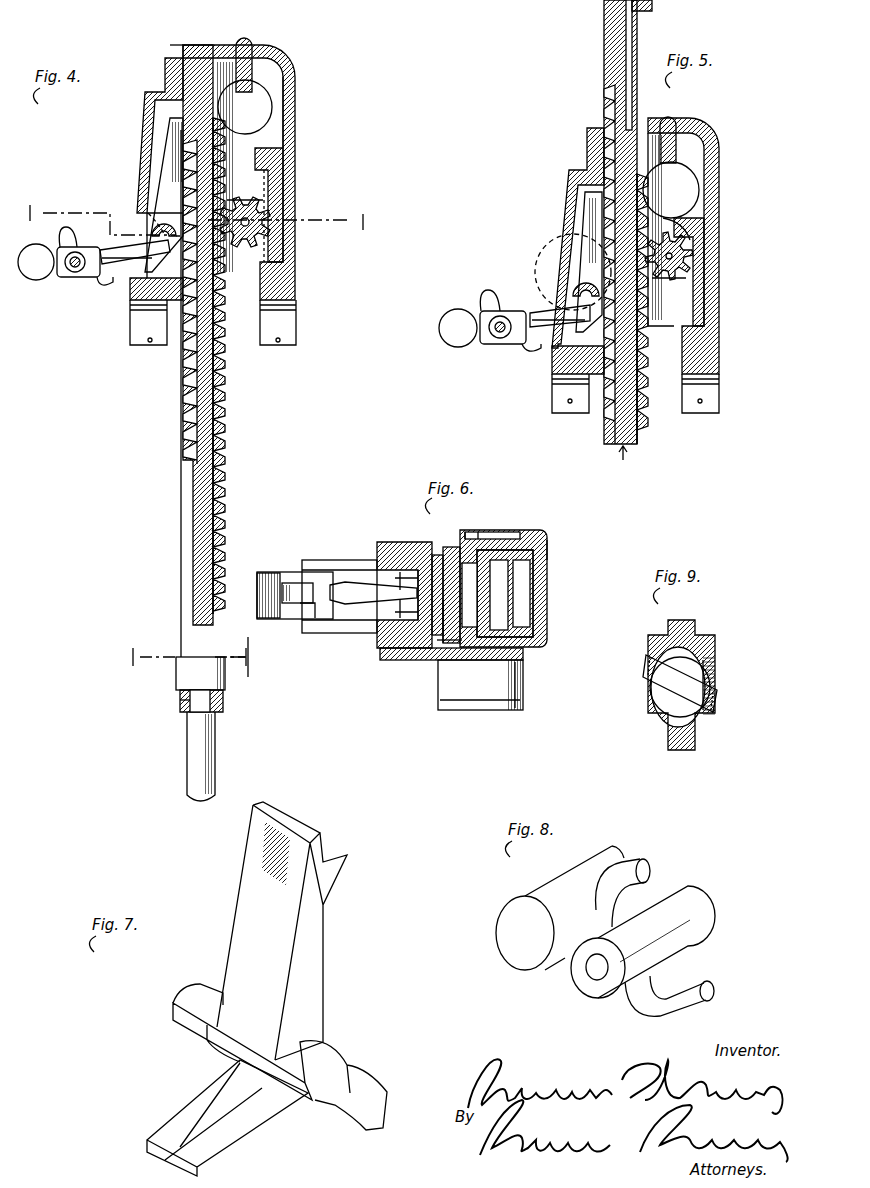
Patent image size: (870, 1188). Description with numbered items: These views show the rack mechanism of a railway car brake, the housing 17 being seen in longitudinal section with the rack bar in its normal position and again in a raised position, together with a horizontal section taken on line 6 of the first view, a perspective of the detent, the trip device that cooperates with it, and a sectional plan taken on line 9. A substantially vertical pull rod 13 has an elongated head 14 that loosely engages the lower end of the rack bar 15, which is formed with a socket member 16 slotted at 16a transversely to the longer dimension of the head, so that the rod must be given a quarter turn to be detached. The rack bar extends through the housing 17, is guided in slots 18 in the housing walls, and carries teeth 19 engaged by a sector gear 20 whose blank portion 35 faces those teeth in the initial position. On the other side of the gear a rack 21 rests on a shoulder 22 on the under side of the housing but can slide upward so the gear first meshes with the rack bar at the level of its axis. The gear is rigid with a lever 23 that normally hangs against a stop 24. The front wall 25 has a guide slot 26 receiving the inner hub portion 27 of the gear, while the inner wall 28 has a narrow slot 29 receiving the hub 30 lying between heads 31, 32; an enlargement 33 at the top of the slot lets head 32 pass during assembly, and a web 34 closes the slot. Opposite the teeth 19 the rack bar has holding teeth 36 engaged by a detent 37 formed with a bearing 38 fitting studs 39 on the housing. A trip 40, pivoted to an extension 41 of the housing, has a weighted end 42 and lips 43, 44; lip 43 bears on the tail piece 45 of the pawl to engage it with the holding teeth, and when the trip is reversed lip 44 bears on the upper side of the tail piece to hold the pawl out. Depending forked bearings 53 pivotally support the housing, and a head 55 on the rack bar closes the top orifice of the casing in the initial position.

In FIG. 4, the section line 6— 6 is at (194, 220).
In FIG. 4, the section line 9— 9 is at (189, 658).
In FIG. 6, the section line 9— 9 is at (245, 657).
In FIG. 4, the pull rod 13 is at (190, 768).
In FIG. 9, the pull rod 13 is at (660, 700).
In FIG. 9, the elongated head 14 is at (717, 694).
In FIG. 4, the rack bar 15 is at (181, 586).
In FIG. 5, the rack bar 15 is at (621, 463).
In FIG. 6, the rack bar 15 is at (440, 651).
In FIG. 9, the rack bar 15 is at (722, 734).
In FIG. 4, the socket member 16 is at (181, 712).
In FIG. 9, the socket member 16 is at (712, 646).
In FIG. 4, the slot 16a is at (180, 703).
In FIG. 9, the slot 16a is at (712, 667).
In FIG. 4, the housing 17 is at (297, 70).
In FIG. 5, the housing 17 is at (580, 150).
In FIG. 6, the housing 17 is at (548, 546).
In FIG. 6, the slots 18 is at (446, 546).
In FIG. 4, the teeth 19 is at (225, 378).
In FIG. 5, the teeth 19 is at (648, 420).
In FIG. 6, the teeth 19 is at (425, 649).
In FIG. 4, the sector gear 20 is at (229, 216).
In FIG. 5, the sector gear 20 is at (719, 258).
In FIG. 6, the sector gear 20 is at (520, 592).
In FIG. 4, the rack 21 is at (236, 210).
In FIG. 5, the rack 21 is at (697, 246).
In FIG. 4, the shoulder 22 is at (283, 264).
In FIG. 5, the shoulder 22 is at (716, 356).
In FIG. 6, the lever 23 is at (497, 708).
In FIG. 6, the stop 24 is at (548, 668).
In FIG. 6, the front wall 25 is at (430, 649).
In FIG. 6, the guide slot 26 is at (545, 652).
In FIG. 6, the inner hub portion 27 is at (522, 686).
In FIG. 4, the inner wall 28 is at (281, 108).
In FIG. 5, the inner wall 28 is at (677, 126).
In FIG. 6, the inner wall 28 is at (548, 548).
In FIG. 4, the narrow slot 29 is at (265, 140).
In FIG. 5, the narrow slot 29 is at (719, 283).
In FIG. 6, the narrow slot 29 is at (537, 530).
In FIG. 6, the hub 30 is at (506, 532).
In FIG. 4, the head 31 is at (252, 196).
In FIG. 5, the head 31 is at (681, 240).
In FIG. 6, the head 31 is at (548, 551).
In FIG. 6, the head 32 is at (480, 532).
In FIG. 4, the enlargement 33 is at (268, 98).
In FIG. 5, the enlargement 33 is at (694, 178).
In FIG. 6, the web 34 is at (463, 531).
In FIG. 4, the blank portion 35 is at (262, 205).
In FIG. 5, the blank portion 35 is at (687, 245).
In FIG. 6, the blank portion 35 is at (477, 610).
In FIG. 4, the holding teeth 36 is at (183, 372).
In FIG. 5, the holding teeth 36 is at (605, 410).
In FIG. 6, the holding teeth 36 is at (400, 646).
In FIG. 4, the detent 37 is at (162, 162).
In FIG. 5, the detent 37 is at (588, 240).
In FIG. 7, the detent 37 is at (252, 955).
In FIG. 4, the bearing 38 is at (168, 233).
In FIG. 5, the bearing 38 is at (567, 263).
In FIG. 6, the bearing 38 is at (405, 578).
In FIG. 7, the bearing 38 is at (172, 1003).
In FIG. 4, the studs 39 is at (152, 228).
In FIG. 5, the studs 39 is at (578, 290).
In FIG. 6, the studs 39 is at (410, 566).
In FIG. 4, the trip 40 is at (62, 276).
In FIG. 5, the trip 40 is at (487, 341).
In FIG. 6, the trip 40 is at (310, 620).
In FIG. 8, the trip 40 is at (693, 914).
In FIG. 4, the extension 41 is at (122, 266).
In FIG. 5, the extension 41 is at (540, 313).
In FIG. 6, the extension 41 is at (350, 560).
In FIG. 4, the weighted end 42 is at (34, 281).
In FIG. 5, the weighted end 42 is at (458, 309).
In FIG. 6, the weighted end 42 is at (263, 572).
In FIG. 8, the weighted end 42 is at (517, 968).
In FIG. 4, the lip 43 is at (105, 280).
In FIG. 5, the lip 43 is at (529, 352).
In FIG. 6, the lip 43 is at (330, 612).
In FIG. 8, the lip 43 is at (715, 981).
In FIG. 4, the lip 44 is at (60, 236).
In FIG. 5, the lip 44 is at (489, 290).
In FIG. 6, the lip 44 is at (282, 593).
In FIG. 8, the lip 44 is at (651, 869).
In FIG. 4, the tail piece 45 is at (122, 250).
In FIG. 5, the tail piece 45 is at (551, 356).
In FIG. 6, the tail piece 45 is at (360, 583).
In FIG. 7, the tail piece 45 is at (180, 1115).
In FIG. 4, the forked bearings 53 is at (140, 313).
In FIG. 5, the forked bearings 53 is at (565, 388).
In FIG. 4, the head 55 is at (186, 46).
In FIG. 5, the head 55 is at (652, 5).